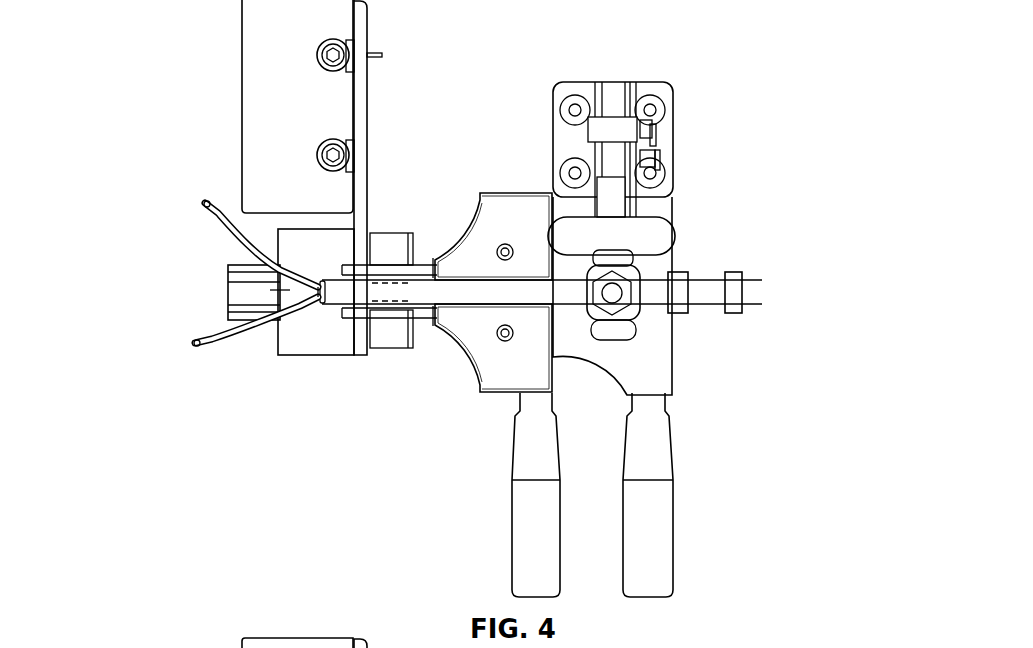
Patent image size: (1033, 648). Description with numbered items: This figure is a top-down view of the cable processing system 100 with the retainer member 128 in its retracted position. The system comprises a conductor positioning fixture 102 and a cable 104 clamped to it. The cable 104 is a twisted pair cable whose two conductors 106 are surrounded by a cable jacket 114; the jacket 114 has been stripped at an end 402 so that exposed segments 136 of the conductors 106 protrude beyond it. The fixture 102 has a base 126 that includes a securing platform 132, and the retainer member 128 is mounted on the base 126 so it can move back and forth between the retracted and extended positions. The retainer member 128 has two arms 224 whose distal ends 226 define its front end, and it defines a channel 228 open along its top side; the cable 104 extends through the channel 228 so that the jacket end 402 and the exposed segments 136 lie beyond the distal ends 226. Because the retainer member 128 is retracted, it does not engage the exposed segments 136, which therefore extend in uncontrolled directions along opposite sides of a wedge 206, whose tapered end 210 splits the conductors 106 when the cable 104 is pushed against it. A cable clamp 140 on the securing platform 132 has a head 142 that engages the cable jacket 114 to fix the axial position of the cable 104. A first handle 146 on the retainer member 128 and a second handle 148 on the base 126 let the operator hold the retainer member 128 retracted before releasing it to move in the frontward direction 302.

The cable processing system 100 is at (755, 98).
The conductor positioning fixture 102 is at (429, 188).
The cable 104 is at (710, 292).
The conductors 106 is at (217, 200).
The cable jacket 114 is at (492, 297).
The base 126 is at (236, 294).
The retainer member 128 is at (498, 205).
The securing platform 132 is at (657, 355).
The exposed segments 136 is at (226, 240).
The cable clamp 140 is at (618, 185).
The head 142 is at (633, 272).
The first handle 146 is at (527, 547).
The second handle 148 is at (662, 563).
The wedge 206 is at (213, 333).
The tapered end 210 is at (306, 285).
The arms 224 is at (403, 262).
The distal ends 226 is at (333, 318).
The channel 228 is at (527, 265).
The frontward direction 302 is at (868, 386).
The end of the jacket 402 is at (318, 307).